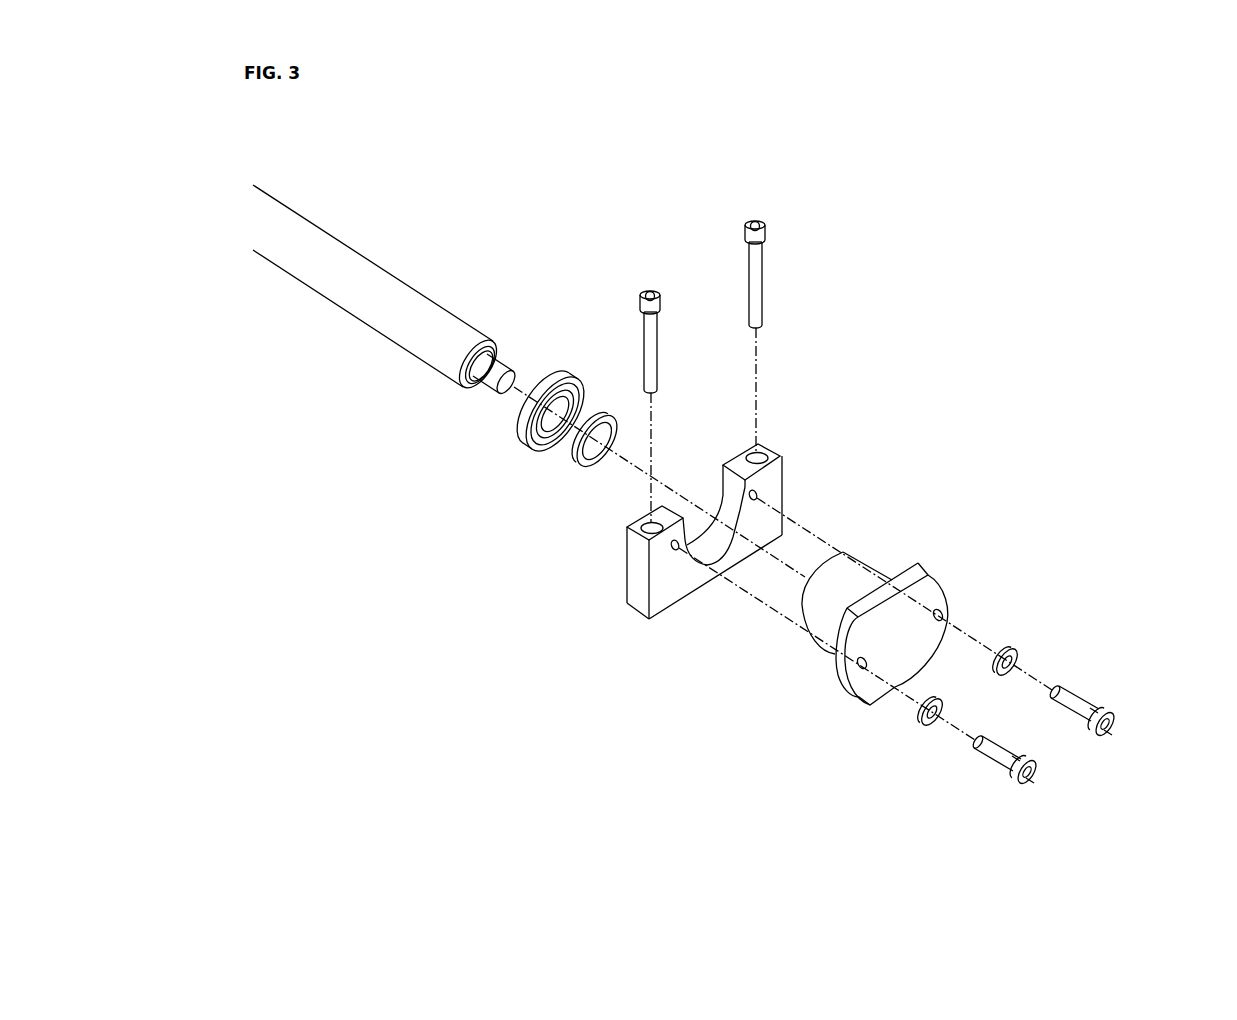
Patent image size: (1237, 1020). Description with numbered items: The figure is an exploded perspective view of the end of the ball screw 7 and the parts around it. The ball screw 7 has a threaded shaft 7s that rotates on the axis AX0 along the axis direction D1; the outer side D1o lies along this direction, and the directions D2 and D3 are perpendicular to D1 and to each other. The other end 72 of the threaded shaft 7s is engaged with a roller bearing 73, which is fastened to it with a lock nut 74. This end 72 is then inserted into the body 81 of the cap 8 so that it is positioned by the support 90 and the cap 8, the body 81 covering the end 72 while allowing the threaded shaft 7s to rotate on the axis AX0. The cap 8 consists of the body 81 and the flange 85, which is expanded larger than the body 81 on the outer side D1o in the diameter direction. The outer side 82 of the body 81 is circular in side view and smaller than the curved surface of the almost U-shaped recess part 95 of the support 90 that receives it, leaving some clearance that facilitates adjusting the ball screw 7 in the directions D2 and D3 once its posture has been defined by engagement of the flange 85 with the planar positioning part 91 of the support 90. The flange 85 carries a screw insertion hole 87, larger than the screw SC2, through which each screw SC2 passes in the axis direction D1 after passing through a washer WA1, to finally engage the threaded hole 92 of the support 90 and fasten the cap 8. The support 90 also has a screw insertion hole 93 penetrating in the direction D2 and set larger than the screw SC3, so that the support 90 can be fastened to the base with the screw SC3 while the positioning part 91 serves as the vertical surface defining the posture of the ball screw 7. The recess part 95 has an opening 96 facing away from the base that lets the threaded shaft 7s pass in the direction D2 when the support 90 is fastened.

The ball screw 7 is at (286, 276).
The threaded shaft 7s is at (340, 315).
The other end 72 is at (491, 391).
The roller bearing 73 is at (538, 448).
The lock nut 74 is at (584, 470).
The axis AX0 is at (527, 378).
The support 90 is at (785, 447).
The positioning part 91 is at (670, 573).
The threaded hole 92 is at (759, 497).
The screw insertion hole 93 is at (647, 521).
The recess part 95 is at (722, 548).
The opening 96 is at (698, 488).
The screw SC3 is at (646, 291).
The screw SC2 is at (1114, 728).
The washer WA1 is at (1018, 653).
The cap 8 is at (895, 619).
The body 81 is at (869, 560).
The outer side 82 is at (815, 637).
The flange 85 is at (928, 562).
The screw insertion hole 87 is at (944, 612).
The axis direction D1 is at (374, 240).
The outer side D1o is at (920, 462).
The direction D2 is at (782, 283).
The direction D3 is at (519, 625).